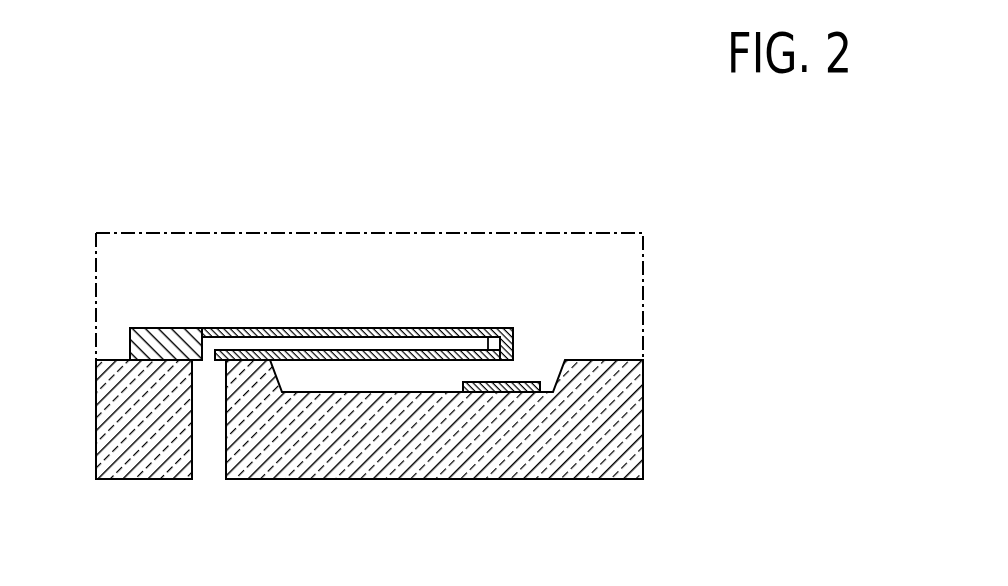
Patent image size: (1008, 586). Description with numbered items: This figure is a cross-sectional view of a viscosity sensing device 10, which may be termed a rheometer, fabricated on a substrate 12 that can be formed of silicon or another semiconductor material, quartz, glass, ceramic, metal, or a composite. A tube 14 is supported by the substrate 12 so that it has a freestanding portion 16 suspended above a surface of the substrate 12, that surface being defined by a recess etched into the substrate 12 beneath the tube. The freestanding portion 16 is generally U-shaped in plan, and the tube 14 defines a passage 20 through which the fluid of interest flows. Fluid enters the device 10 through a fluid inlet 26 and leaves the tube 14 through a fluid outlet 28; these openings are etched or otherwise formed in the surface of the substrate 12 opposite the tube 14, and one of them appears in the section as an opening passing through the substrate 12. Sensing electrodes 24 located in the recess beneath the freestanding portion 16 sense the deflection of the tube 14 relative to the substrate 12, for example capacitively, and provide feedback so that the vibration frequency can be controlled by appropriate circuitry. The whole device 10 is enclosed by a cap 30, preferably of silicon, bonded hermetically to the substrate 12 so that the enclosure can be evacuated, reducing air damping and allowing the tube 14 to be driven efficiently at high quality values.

The viscosity sensing device 10 is at (331, 178).
The substrate 12 is at (628, 418).
The tube 14 is at (175, 298).
The freestanding portion 16 is at (387, 328).
The passage 20 is at (276, 345).
The sensing electrodes 24 is at (541, 386).
The fluid inlet 26 is at (164, 457).
The fluid outlet 28 is at (207, 458).
The cap 30 is at (578, 232).